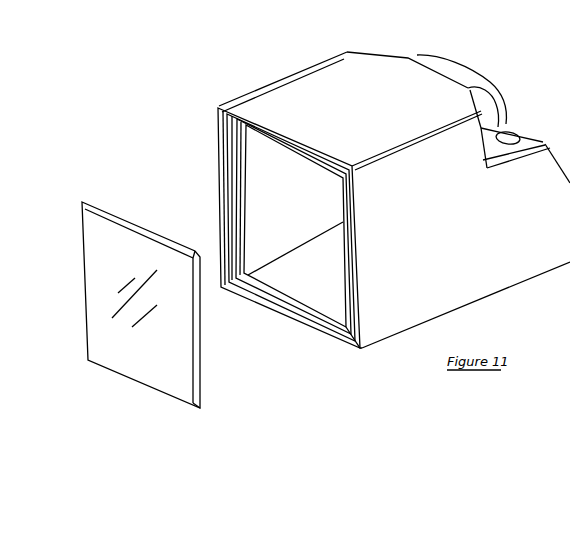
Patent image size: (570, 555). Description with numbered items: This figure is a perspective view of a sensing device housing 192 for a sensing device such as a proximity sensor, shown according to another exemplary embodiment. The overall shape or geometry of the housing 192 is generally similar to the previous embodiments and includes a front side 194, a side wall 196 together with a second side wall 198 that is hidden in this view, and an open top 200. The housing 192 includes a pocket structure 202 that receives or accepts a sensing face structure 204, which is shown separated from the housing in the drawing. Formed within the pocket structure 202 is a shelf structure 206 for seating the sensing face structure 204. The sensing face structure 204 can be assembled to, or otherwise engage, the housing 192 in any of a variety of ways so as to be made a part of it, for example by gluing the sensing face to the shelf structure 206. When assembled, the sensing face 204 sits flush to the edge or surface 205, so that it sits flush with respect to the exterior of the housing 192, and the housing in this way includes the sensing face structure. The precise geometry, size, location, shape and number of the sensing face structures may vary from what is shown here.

The sensing device housing 192 is at (287, 79).
The front side 194 is at (375, 128).
The side wall 196 is at (457, 253).
The side wall 198 is at (309, 62).
The open top 200 is at (313, 290).
The pocket structure 202 is at (228, 181).
The sensing face structure 204 is at (190, 386).
The edge or surface 205 is at (359, 352).
The shelf structure 206 is at (237, 140).